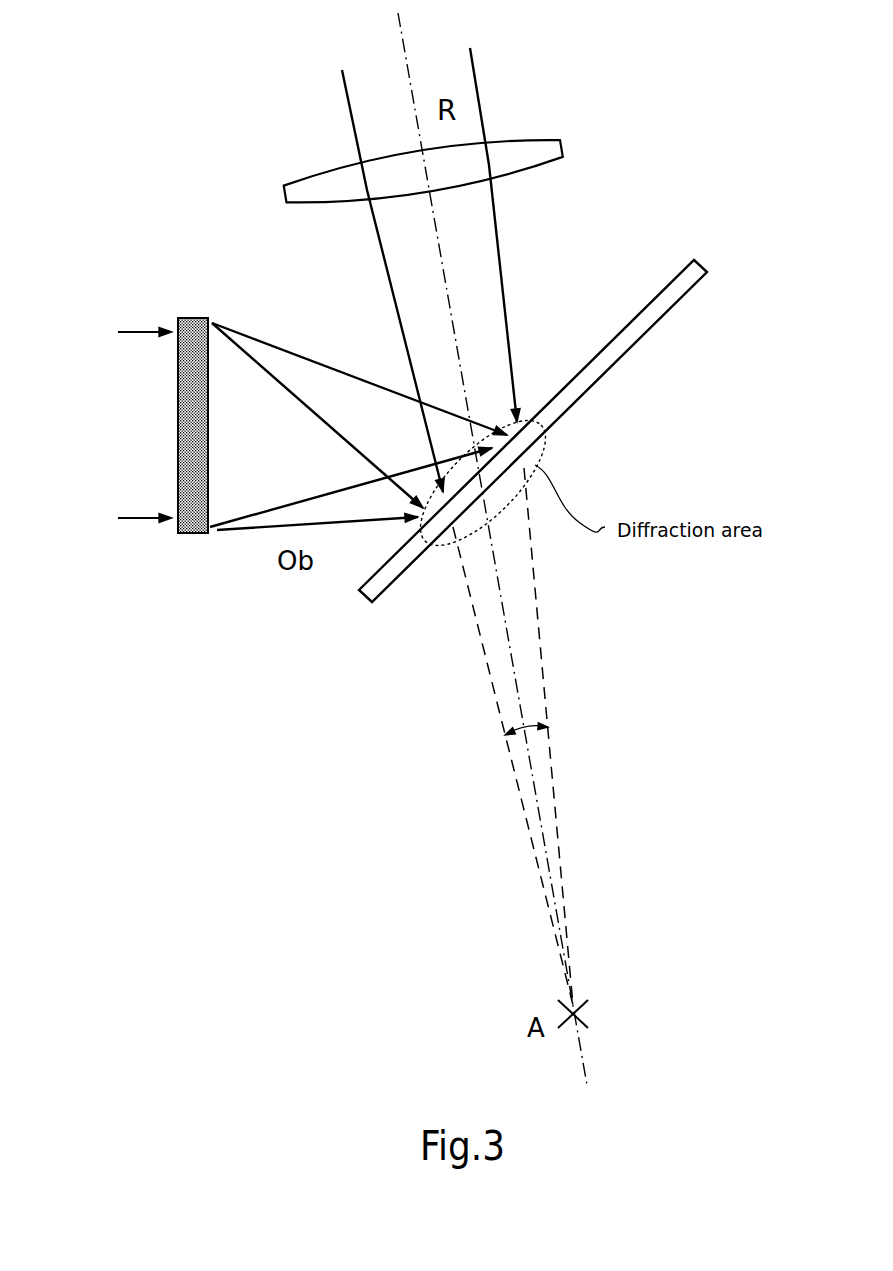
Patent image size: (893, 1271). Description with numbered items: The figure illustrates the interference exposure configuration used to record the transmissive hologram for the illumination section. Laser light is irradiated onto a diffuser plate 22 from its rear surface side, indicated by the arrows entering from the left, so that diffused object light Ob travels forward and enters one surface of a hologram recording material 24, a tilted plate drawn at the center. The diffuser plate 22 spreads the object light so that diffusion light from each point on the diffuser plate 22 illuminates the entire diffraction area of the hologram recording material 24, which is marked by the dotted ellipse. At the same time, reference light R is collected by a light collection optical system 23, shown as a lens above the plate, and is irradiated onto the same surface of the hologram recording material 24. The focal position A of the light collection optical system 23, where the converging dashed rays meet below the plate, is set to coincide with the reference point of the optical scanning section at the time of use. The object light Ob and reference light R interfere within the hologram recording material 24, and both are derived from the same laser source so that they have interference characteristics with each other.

The diffuser plate 22 is at (193, 534).
The light collection optical system 23 is at (563, 150).
The hologram recording material 24 is at (552, 412).